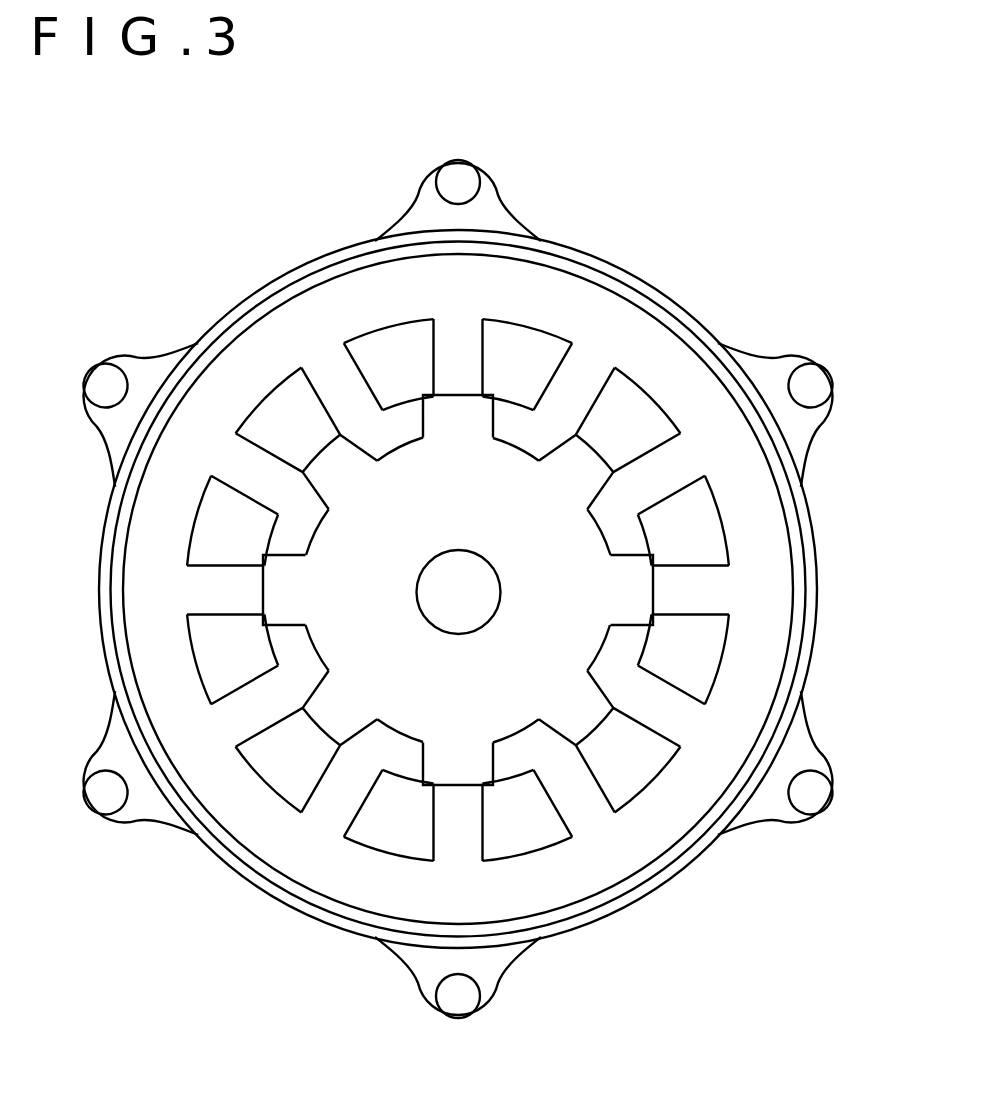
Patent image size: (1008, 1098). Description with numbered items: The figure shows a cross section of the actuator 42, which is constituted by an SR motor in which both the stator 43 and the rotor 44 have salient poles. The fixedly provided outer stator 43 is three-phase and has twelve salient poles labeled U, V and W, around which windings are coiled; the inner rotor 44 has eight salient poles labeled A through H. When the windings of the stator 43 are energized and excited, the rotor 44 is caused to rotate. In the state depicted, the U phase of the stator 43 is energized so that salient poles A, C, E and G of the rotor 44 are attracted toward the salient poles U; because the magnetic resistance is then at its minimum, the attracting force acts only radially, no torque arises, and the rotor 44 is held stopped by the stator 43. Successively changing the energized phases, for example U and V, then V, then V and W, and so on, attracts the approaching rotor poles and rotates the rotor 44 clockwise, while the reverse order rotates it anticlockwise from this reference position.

The actuator 42 is at (840, 106).
The stator 43 is at (548, 298).
The rotor 44 is at (567, 548).